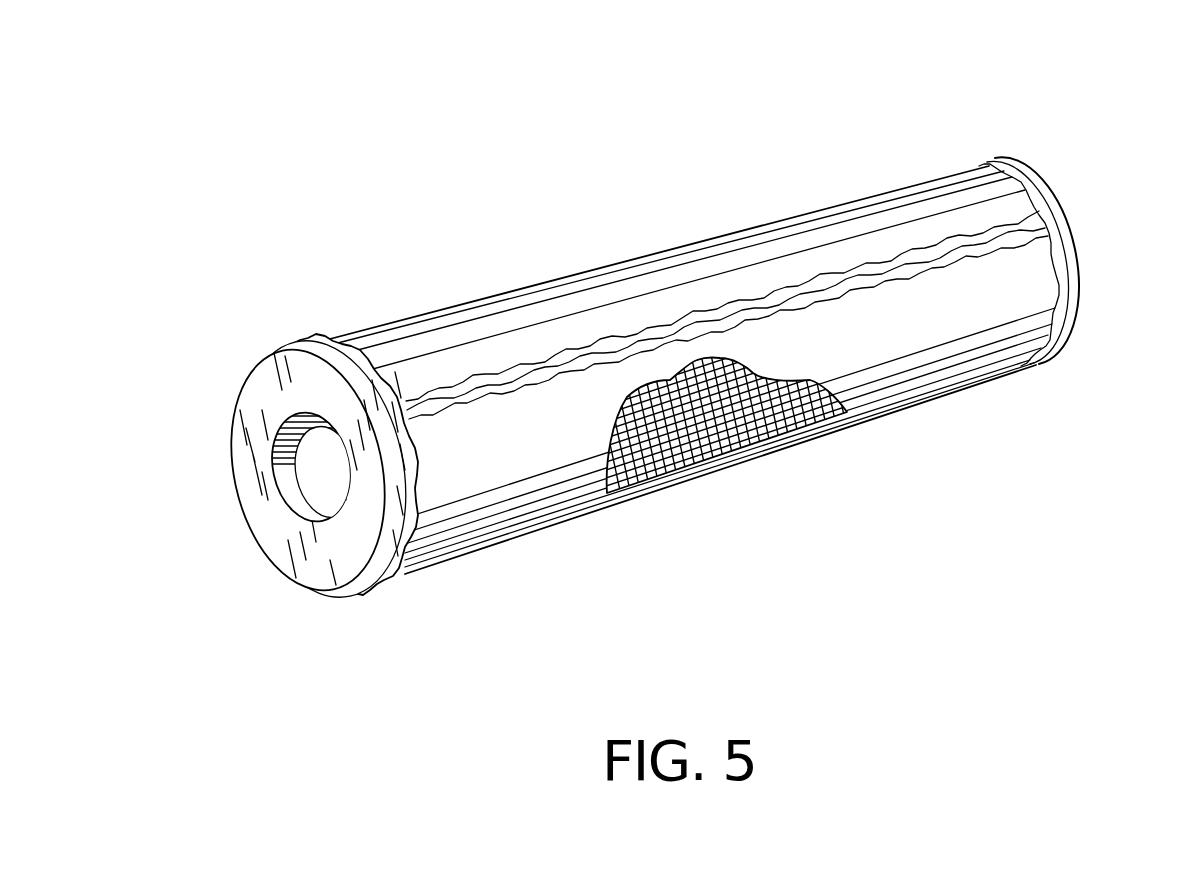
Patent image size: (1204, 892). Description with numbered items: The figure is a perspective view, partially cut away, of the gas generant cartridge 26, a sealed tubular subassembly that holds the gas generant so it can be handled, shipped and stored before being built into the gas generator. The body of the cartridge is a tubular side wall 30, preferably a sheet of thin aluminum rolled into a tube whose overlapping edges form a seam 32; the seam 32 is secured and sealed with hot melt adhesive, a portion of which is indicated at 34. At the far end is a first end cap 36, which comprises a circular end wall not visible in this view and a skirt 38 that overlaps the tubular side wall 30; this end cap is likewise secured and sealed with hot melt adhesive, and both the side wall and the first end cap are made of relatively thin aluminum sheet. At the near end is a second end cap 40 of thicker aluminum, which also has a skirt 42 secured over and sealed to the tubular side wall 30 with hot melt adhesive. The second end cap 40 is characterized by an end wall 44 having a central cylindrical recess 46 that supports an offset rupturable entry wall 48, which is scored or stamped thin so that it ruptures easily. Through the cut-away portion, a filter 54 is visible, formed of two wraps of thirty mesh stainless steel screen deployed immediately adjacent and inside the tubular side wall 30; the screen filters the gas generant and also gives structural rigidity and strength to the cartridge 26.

The gas generant cartridge 26 is at (781, 162).
The tubular side wall 30 is at (630, 259).
The seam 32 is at (503, 385).
The hot melt adhesive 34 is at (539, 385).
The first end cap 36 is at (1047, 182).
The skirt 38 is at (1070, 250).
The second end cap 40 is at (328, 563).
The skirt 42 is at (394, 547).
The end wall 44 is at (286, 401).
The central cylindrical recess 46 is at (307, 498).
The offset rupturable entry wall 48 is at (332, 477).
The filter 54 is at (793, 433).